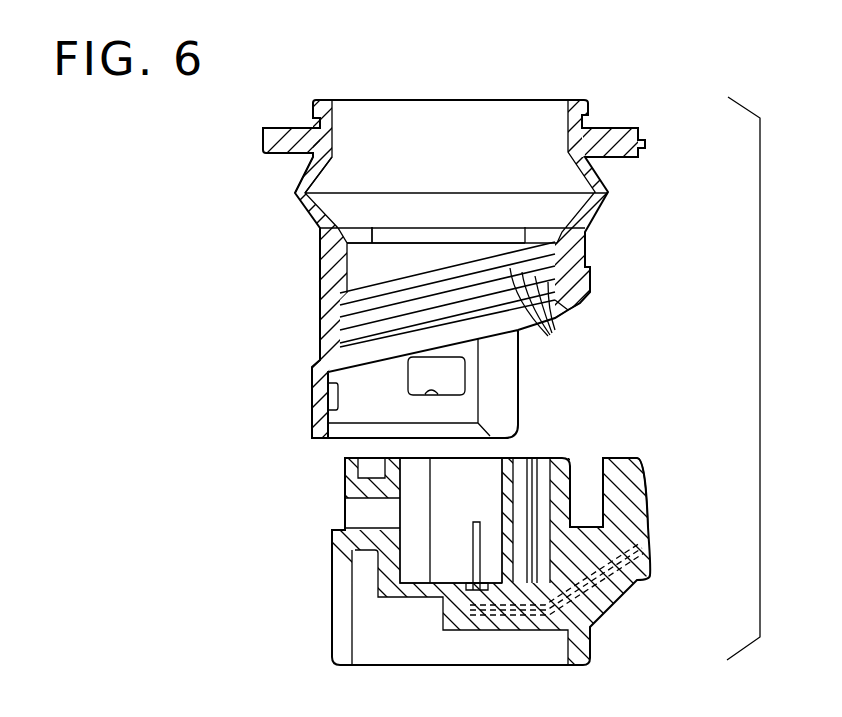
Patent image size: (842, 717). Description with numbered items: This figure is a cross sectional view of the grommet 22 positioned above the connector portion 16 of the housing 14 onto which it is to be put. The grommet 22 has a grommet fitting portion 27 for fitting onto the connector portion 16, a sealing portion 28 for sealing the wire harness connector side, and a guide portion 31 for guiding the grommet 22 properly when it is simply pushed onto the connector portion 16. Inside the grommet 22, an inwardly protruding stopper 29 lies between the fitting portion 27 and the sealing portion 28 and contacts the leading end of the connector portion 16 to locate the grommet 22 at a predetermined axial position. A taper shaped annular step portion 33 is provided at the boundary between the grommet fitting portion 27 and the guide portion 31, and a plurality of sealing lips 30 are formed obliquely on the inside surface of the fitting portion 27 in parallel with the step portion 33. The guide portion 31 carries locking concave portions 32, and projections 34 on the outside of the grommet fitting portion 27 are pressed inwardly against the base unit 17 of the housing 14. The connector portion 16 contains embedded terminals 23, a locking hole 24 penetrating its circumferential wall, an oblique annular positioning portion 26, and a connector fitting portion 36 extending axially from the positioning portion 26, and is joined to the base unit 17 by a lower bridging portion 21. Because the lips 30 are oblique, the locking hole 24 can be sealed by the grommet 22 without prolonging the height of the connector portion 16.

The housing 14 is at (661, 530).
The connector portion 16 is at (365, 670).
The base unit 17 is at (637, 488).
The bridging portion 21 is at (613, 592).
The grommet 22 is at (599, 101).
The terminals 23 is at (476, 518).
The locking hole 24 is at (403, 520).
The annular positioning portion 26 is at (570, 458).
The grommet fitting portion 27 is at (318, 276).
The sealing portion 28 is at (296, 182).
The stopper 29 is at (378, 232).
The sealing lips 30 is at (548, 328).
The guide portion 31 is at (316, 393).
The locking concave portions 32 is at (420, 398).
The taper shaped annular step portion 33 is at (562, 318).
The projections 34 is at (600, 268).
The connector fitting portion 36 is at (598, 465).